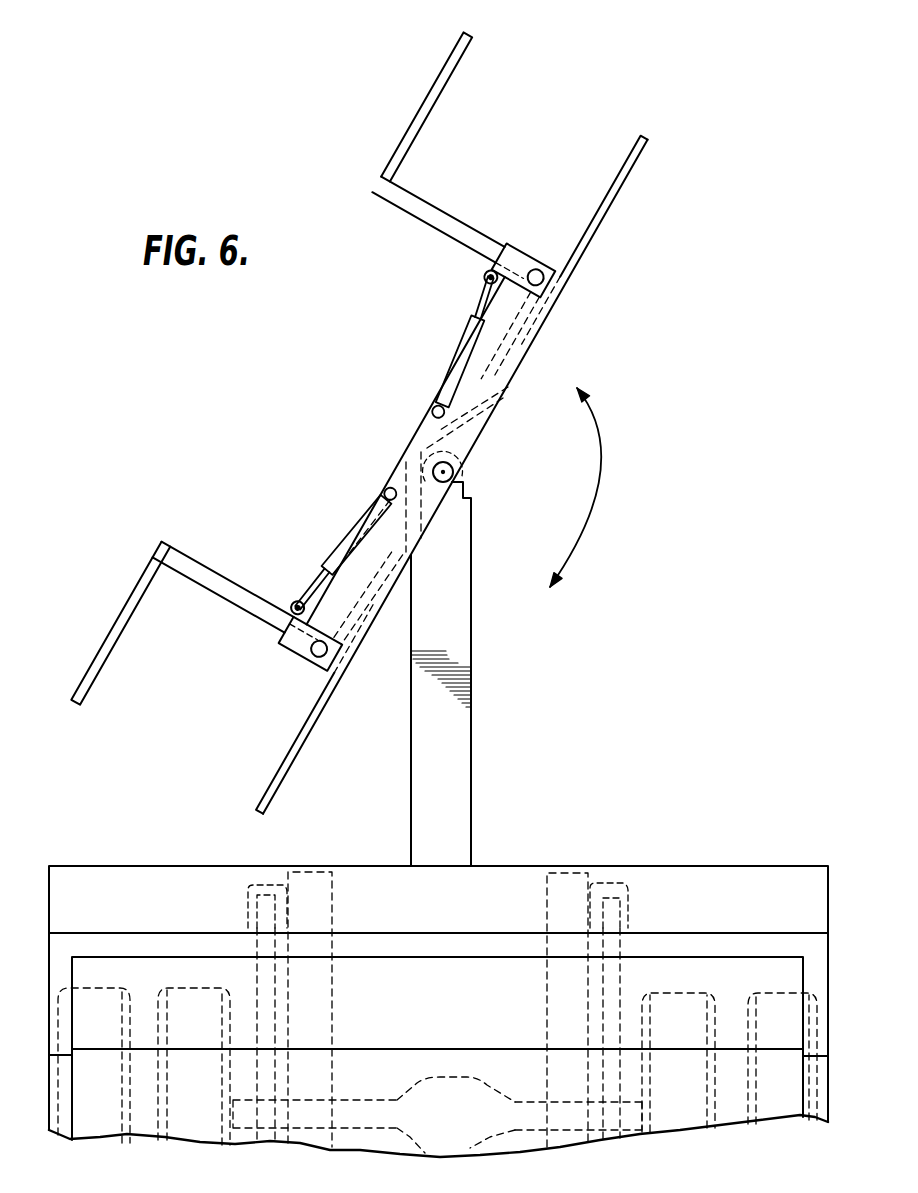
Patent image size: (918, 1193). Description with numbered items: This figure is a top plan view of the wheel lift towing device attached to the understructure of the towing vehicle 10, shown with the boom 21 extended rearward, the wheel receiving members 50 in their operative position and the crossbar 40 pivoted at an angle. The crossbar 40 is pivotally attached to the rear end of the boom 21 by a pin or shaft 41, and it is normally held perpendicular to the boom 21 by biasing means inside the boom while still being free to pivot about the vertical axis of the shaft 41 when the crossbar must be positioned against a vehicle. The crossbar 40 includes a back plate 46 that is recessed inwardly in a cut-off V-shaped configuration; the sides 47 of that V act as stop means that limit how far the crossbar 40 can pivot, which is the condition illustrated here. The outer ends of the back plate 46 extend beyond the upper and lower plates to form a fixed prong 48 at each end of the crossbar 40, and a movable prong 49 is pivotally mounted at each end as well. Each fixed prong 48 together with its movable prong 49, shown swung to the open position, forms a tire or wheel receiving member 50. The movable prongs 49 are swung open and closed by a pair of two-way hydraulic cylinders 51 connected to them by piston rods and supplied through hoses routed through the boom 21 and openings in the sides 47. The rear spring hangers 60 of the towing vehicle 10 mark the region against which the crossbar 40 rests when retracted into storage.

The towing vehicle 10 is at (662, 864).
The boom 21 is at (448, 761).
The crossbar 40 is at (493, 417).
The pin or shaft 41 is at (445, 477).
The back plate 46 is at (552, 327).
The sides of the V-shaped configuration 47 is at (466, 408).
The fixed prong 48 is at (610, 195).
The movable prong 49 is at (413, 127).
The wheel receiving member 50 is at (477, 228).
The two-way hydraulic cylinders 51 is at (450, 358).
The rear spring hangers 60 is at (627, 900).